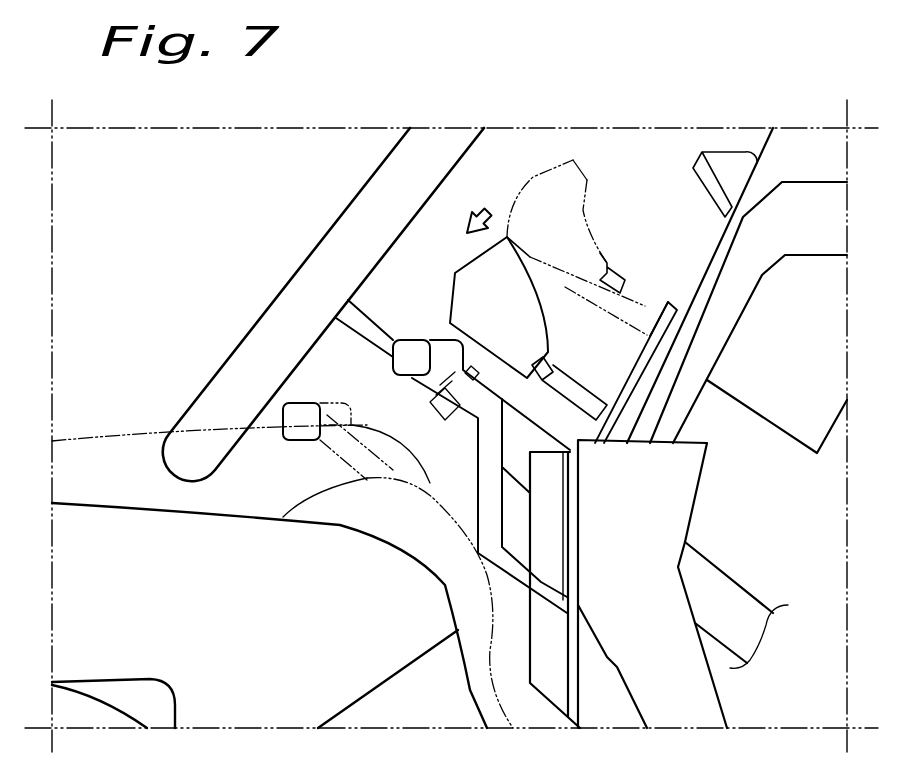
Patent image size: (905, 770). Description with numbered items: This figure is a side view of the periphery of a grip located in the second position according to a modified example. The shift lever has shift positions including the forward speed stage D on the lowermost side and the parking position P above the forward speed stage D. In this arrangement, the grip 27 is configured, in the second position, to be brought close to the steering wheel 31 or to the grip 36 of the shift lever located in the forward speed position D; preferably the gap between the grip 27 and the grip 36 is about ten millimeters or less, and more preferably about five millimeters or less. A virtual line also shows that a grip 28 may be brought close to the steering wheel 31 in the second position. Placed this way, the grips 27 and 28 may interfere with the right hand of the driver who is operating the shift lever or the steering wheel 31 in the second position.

The steering wheel 31 is at (200, 391).
The grip 27 is at (416, 340).
The grip 28 is at (296, 441).
The grip of the shift lever 36 is at (503, 310).
The parking position P is at (645, 330).
The forward speed stage D is at (597, 413).